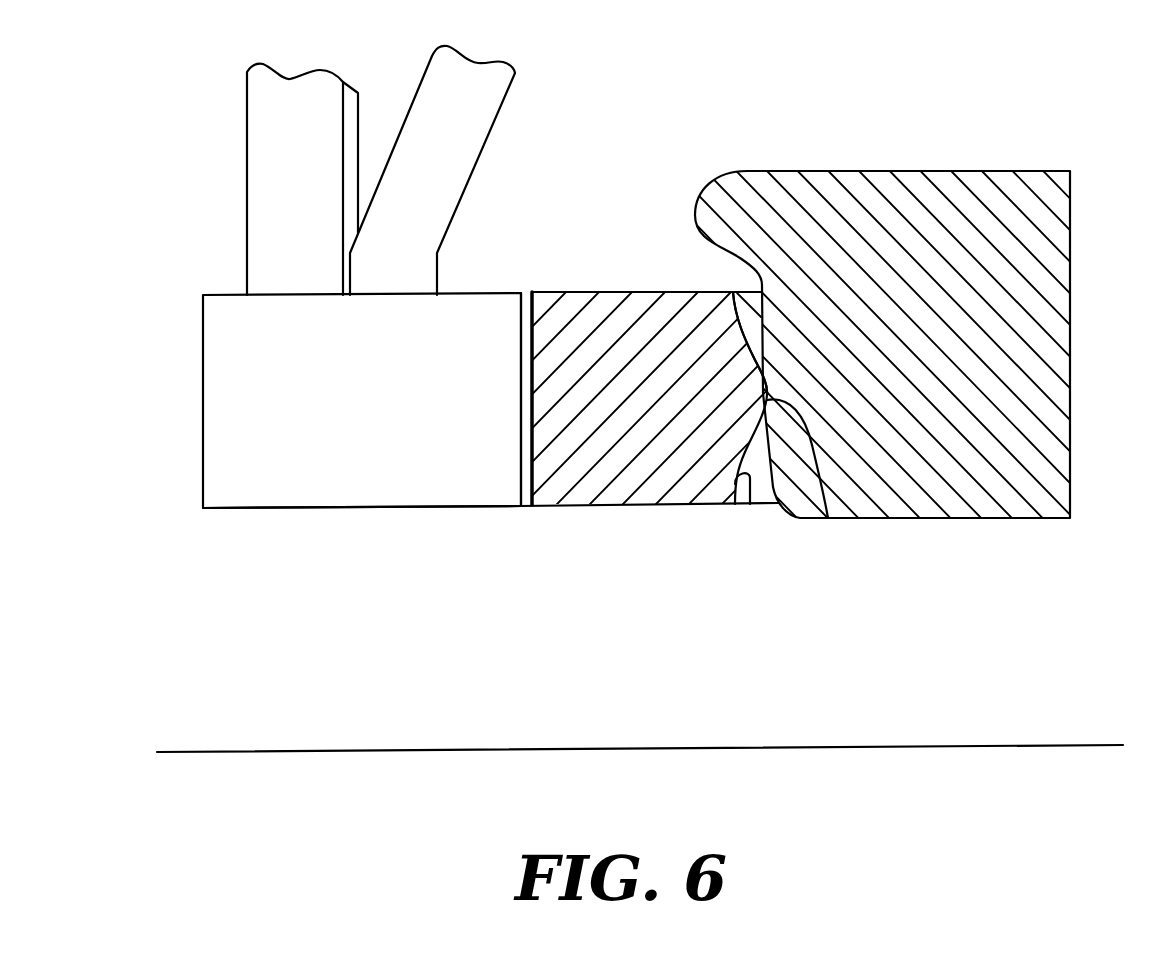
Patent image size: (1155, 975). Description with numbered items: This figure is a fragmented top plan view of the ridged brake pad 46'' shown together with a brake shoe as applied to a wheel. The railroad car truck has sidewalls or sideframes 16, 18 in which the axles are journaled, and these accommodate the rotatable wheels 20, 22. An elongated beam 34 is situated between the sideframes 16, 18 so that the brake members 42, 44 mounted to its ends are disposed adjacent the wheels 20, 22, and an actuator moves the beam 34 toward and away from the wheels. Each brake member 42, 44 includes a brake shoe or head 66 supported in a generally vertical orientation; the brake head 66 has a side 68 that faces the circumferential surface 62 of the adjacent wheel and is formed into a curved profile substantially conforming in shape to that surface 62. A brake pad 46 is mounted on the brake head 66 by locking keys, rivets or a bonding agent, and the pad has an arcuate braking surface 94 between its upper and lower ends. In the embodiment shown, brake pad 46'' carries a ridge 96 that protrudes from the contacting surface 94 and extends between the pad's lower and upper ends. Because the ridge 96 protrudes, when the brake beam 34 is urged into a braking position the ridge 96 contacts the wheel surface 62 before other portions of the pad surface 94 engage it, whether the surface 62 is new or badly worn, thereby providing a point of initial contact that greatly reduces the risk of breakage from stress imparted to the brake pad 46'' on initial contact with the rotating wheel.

The sideframe 16 is at (640, 704).
The sideframe 18 is at (448, 750).
The wheel 20 is at (807, 325).
The wheel 22 is at (920, 181).
The beam 34 is at (258, 158).
The brake member 42 is at (277, 400).
The brake member 44 is at (203, 431).
The brake pad 46 is at (642, 442).
The brake pad 46'' is at (642, 442).
The circumferential surface 62 is at (733, 292).
The brake head 66 is at (297, 492).
The side 68 is at (533, 470).
The braking surface 94 is at (750, 504).
The ridge 96 is at (828, 518).